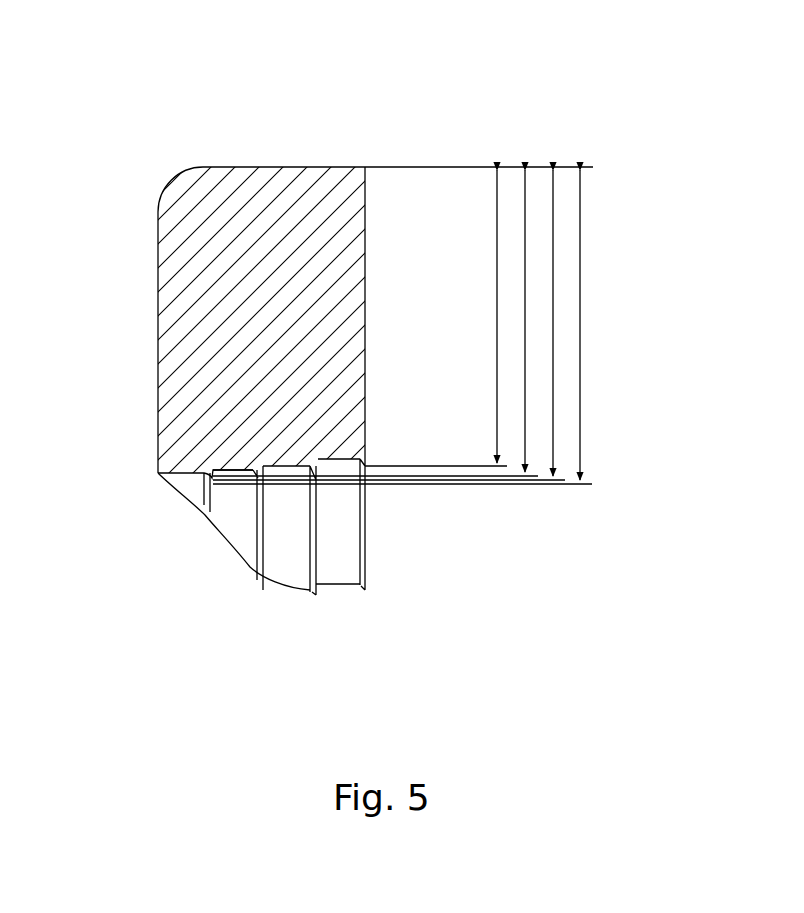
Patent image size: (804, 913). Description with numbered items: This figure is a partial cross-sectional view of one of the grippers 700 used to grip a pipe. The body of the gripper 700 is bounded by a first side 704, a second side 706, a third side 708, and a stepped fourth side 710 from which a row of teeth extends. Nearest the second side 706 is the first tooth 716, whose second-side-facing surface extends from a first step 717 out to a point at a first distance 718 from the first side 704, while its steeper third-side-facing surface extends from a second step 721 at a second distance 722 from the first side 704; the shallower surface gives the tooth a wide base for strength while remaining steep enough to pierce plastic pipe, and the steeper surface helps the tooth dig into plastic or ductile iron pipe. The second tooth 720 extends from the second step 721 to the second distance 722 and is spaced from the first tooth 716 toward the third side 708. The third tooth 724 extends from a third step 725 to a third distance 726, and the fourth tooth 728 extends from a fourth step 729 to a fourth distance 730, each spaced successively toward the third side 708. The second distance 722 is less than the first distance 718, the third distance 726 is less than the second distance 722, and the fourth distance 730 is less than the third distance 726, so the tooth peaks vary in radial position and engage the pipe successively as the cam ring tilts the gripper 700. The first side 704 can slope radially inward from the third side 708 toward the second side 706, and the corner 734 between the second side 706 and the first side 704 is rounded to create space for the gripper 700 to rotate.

The gripper 700 is at (350, 56).
The first side 704 is at (267, 156).
The second side 706 is at (145, 281).
The third side 708 is at (380, 293).
The fourth side 710 is at (285, 500).
The first tooth 716 is at (206, 470).
The first step 717 is at (176, 472).
The first distance 718 is at (580, 234).
The second tooth 720 is at (257, 470).
The second step 721 is at (233, 468).
The second distance 722 is at (553, 285).
The third tooth 724 is at (312, 464).
The third step 725 is at (288, 466).
The third distance 726 is at (525, 330).
The fourth tooth 728 is at (366, 461).
The fourth step 729 is at (338, 456).
The fourth distance 730 is at (497, 372).
The corner 734 is at (168, 198).